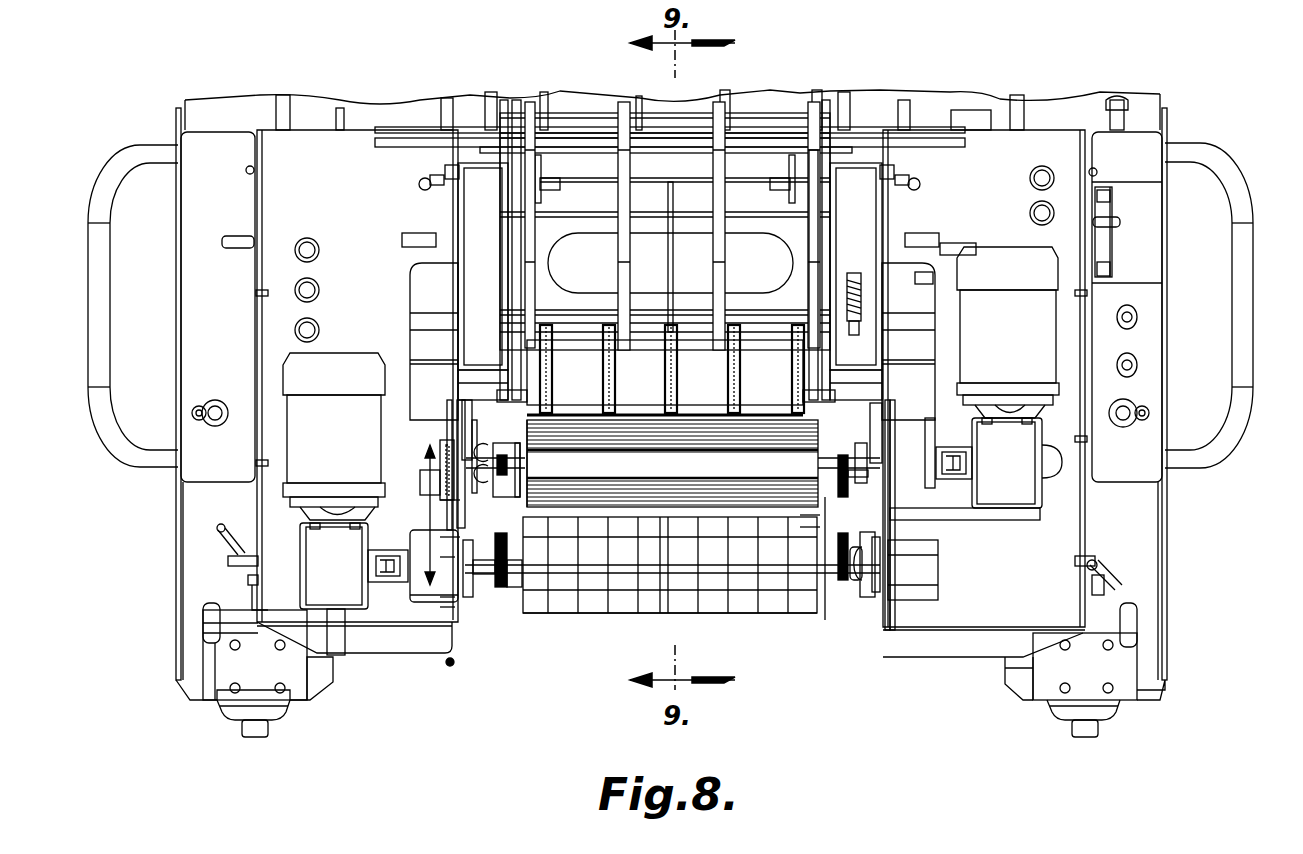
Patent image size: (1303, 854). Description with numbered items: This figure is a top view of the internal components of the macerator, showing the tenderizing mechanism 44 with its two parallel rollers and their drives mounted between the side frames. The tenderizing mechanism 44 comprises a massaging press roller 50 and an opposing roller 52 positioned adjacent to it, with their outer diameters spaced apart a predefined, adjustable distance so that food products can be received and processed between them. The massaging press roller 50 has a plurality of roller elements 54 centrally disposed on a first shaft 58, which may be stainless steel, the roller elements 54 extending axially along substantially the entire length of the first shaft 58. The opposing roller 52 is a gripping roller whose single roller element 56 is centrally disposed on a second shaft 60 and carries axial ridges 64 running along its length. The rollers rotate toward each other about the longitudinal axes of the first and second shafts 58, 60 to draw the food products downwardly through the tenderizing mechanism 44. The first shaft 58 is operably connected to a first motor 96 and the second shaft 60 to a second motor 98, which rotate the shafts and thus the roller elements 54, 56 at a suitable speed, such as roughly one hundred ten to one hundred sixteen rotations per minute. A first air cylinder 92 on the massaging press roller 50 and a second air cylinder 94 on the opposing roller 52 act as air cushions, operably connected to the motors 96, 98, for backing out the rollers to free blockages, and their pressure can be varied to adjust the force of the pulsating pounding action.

The tenderizing mechanism 44 is at (620, 628).
The massaging press roller 50 is at (803, 620).
The opposing roller 52 is at (660, 515).
The roller elements 54 is at (603, 606).
The roller element 56 is at (527, 428).
The first shaft 58 is at (497, 568).
The second shaft 60 is at (490, 567).
The axial ridges 64 is at (770, 497).
The first air cylinder 92 is at (296, 466).
The second air cylinder 94 is at (1050, 345).
The first motor 96 is at (356, 610).
The second motor 98 is at (1027, 490).